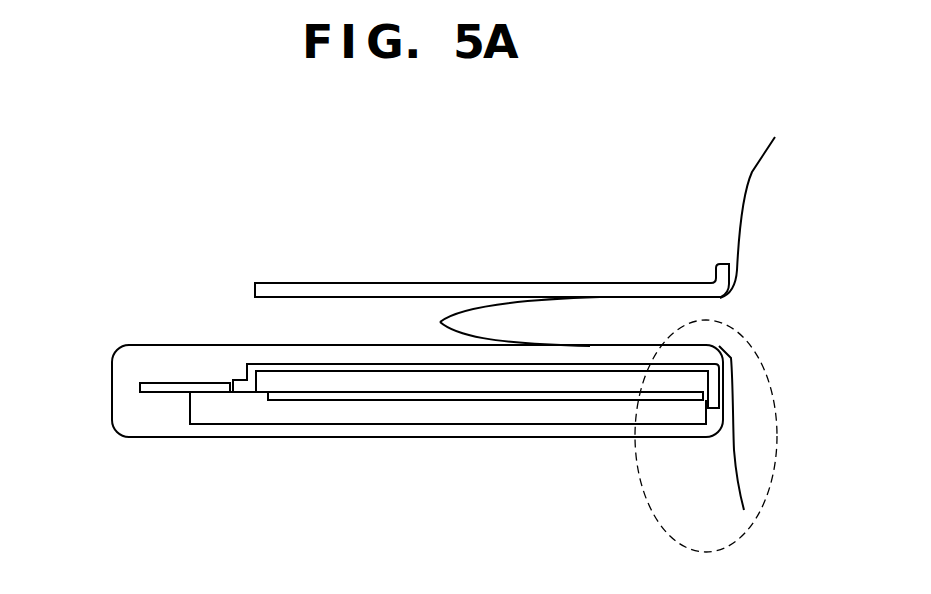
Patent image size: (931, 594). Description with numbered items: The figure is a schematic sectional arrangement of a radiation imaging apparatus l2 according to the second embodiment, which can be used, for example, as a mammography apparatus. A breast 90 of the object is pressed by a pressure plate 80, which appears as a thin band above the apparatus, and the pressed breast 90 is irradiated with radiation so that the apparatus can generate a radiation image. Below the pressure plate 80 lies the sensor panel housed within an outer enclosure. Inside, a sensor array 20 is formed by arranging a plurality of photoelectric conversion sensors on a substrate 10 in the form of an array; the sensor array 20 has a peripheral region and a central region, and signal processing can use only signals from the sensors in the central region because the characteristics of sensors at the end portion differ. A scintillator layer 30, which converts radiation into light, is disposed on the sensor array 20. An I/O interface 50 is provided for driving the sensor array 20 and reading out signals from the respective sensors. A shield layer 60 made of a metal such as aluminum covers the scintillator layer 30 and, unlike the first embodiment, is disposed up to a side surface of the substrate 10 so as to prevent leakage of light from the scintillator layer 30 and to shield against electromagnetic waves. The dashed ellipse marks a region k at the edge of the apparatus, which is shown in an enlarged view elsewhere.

The radiation imaging apparatus l2 is at (78, 172).
The substrate 10 is at (255, 428).
The sensor array 20 is at (442, 402).
The scintillator layer 30 is at (625, 382).
The I/O interface 50 is at (163, 383).
The shield layer 60 is at (257, 362).
The pressure plate 80 is at (355, 273).
The breast 90 is at (477, 302).
The region K k is at (763, 363).